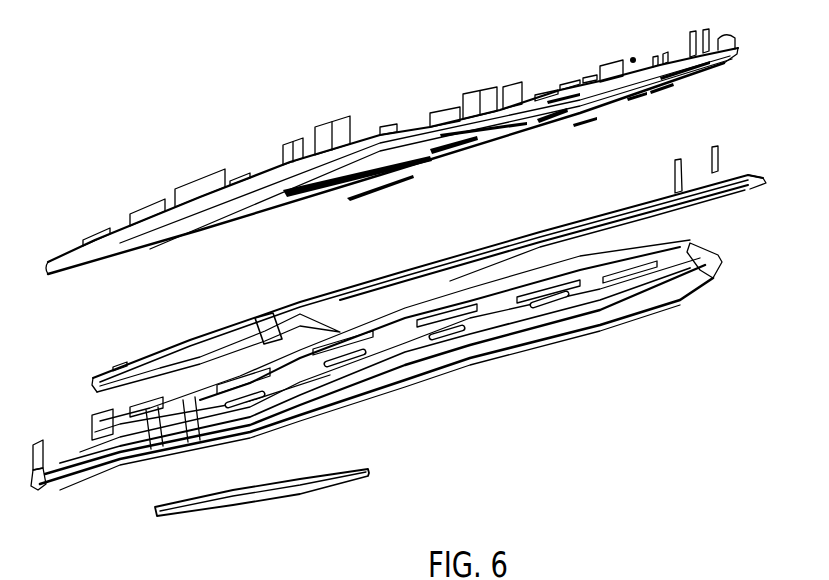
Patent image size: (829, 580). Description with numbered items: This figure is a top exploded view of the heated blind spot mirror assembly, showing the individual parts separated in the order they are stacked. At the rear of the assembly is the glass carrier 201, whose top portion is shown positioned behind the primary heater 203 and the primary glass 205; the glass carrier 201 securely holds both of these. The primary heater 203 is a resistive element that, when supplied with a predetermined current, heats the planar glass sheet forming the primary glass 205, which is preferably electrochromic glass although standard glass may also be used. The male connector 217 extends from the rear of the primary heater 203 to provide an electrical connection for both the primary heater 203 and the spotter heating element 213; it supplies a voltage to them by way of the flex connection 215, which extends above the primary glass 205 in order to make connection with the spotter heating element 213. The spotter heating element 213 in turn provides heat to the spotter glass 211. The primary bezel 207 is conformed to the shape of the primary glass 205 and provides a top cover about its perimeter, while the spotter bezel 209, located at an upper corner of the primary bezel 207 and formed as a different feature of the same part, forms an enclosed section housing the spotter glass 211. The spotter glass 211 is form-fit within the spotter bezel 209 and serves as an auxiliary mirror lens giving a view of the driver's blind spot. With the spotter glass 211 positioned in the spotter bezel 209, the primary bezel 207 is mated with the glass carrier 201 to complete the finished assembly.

The glass carrier 201 is at (637, 68).
The primary heater 203 is at (548, 230).
The primary glass 205 is at (697, 210).
The primary bezel 207 is at (730, 267).
The spotter bezel 209 is at (130, 458).
The spotter glass 211 is at (247, 503).
The spotter heating element 213 is at (340, 330).
The flex connection 215 is at (265, 327).
The male connector 217 is at (722, 163).